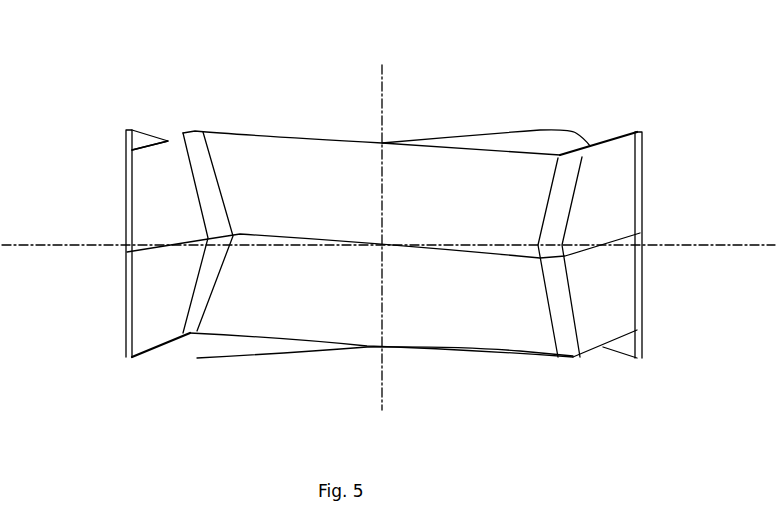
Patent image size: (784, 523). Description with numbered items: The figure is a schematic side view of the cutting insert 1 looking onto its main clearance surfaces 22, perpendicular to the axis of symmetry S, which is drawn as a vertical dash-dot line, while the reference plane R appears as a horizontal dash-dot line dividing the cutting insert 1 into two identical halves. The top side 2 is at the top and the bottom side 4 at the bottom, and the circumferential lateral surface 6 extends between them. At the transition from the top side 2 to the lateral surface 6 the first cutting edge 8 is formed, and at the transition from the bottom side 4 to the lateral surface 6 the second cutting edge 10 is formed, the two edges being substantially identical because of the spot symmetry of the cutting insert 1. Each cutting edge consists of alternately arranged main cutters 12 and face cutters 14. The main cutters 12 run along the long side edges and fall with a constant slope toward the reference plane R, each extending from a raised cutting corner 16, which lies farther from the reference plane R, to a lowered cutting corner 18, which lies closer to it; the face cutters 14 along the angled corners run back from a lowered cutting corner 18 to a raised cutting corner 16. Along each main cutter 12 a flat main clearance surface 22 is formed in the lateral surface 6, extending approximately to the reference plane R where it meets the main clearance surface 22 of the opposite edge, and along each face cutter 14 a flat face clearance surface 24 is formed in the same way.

The cutting insert 1 is at (190, 70).
The top side 2 is at (471, 144).
The bottom side 4 is at (262, 351).
The circumferential lateral surface 6 is at (148, 288).
The first cutting edge 8 is at (357, 141).
The second cutting edge 10 is at (435, 350).
The main cutter 12 is at (283, 137).
The face cutter 14 is at (168, 143).
The raised cutting corner 16 is at (131, 131).
The lowered cutting corner 18 is at (163, 142).
The main clearance surface 22 is at (445, 210).
The face clearance surface 24 is at (108, 268).
The axis of symmetry S is at (383, 97).
The reference plane R is at (687, 245).